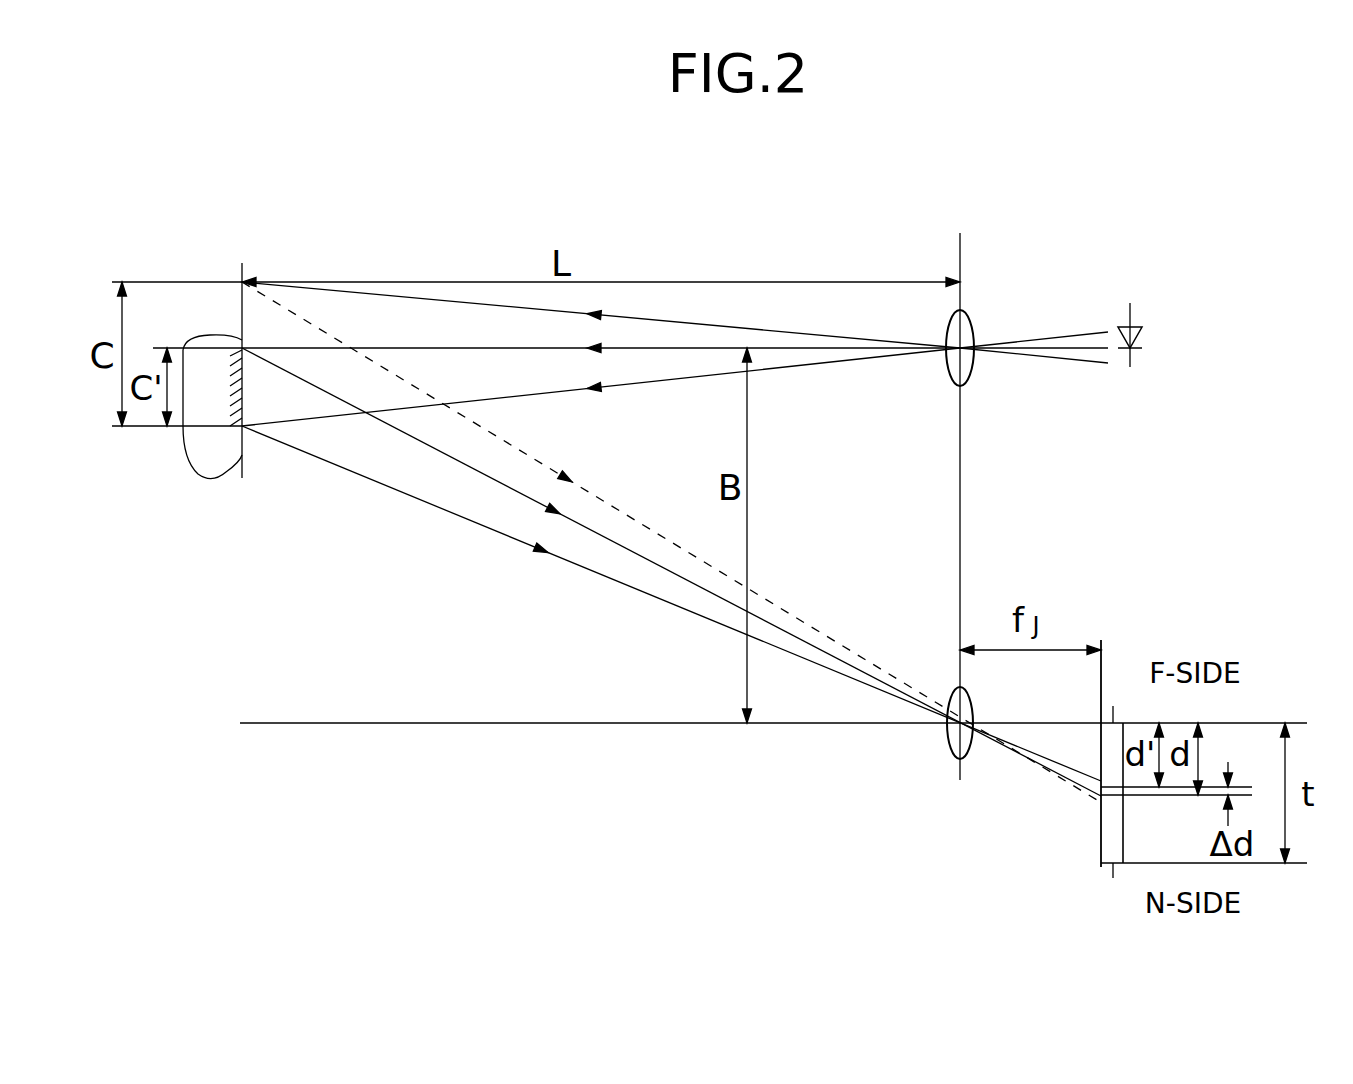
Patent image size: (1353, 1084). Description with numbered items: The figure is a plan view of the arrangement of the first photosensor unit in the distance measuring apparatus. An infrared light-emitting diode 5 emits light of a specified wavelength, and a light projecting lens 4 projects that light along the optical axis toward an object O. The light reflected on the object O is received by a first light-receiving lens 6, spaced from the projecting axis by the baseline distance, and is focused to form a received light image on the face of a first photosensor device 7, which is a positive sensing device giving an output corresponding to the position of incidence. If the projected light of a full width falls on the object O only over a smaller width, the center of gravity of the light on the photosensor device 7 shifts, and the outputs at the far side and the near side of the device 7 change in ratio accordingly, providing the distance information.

The light projecting lens 4 is at (974, 318).
The infrared light-emitting diode 5 is at (1131, 306).
The first light-receiving lens 6 is at (974, 706).
The first photosensor device 7 is at (1100, 842).
The object O is at (212, 480).